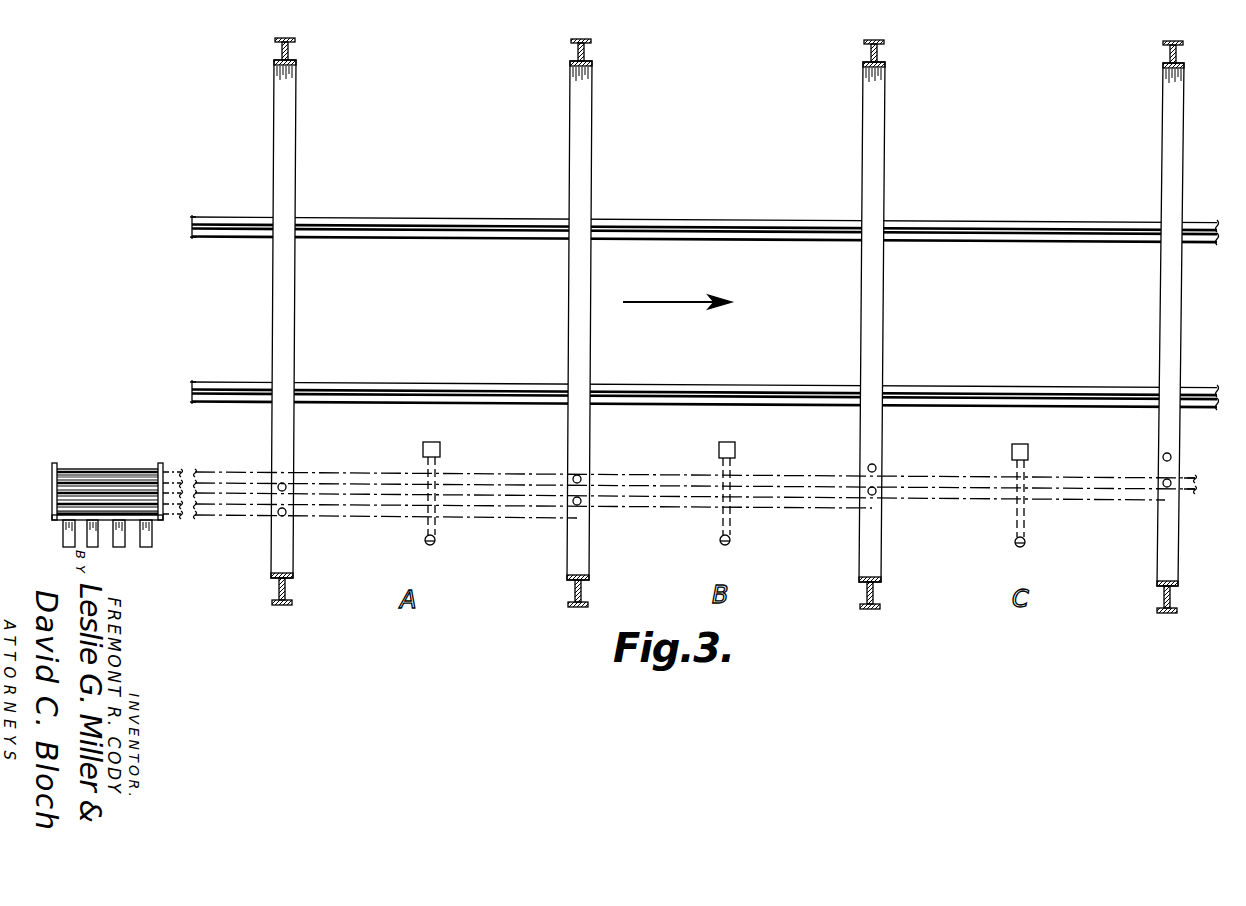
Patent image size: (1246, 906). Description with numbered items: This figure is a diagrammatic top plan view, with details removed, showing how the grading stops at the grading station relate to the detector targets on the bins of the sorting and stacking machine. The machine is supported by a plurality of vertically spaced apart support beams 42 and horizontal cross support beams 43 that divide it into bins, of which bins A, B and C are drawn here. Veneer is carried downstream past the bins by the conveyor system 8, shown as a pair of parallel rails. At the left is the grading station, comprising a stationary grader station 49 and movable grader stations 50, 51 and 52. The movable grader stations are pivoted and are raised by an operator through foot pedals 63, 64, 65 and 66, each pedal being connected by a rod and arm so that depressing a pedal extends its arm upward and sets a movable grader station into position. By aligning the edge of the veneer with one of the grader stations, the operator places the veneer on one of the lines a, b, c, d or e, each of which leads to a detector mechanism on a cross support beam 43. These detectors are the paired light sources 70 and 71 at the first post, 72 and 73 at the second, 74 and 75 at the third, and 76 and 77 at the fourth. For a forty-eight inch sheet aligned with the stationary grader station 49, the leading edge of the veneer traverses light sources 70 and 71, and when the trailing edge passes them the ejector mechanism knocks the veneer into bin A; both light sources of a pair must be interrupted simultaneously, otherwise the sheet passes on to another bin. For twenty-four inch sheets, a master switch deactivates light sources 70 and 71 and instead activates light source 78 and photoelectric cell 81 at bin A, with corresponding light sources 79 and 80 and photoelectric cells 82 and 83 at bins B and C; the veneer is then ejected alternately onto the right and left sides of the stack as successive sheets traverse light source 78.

The conveyor system 8 is at (430, 238).
The support beams 42 is at (290, 44).
The horizontal cross support beams 43 is at (274, 306).
The stationary grader station 49 is at (57, 519).
The movable grader station 50 is at (57, 500).
The movable grader station 51 is at (58, 479).
The movable grader station 52 is at (89, 470).
The foot pedal 63 is at (152, 540).
The foot pedal 64 is at (121, 548).
The foot pedal 65 is at (99, 548).
The foot pedal 66 is at (64, 545).
The light source 70 is at (283, 516).
The light source 71 is at (282, 483).
The light source 72 is at (580, 476).
The light source 73 is at (579, 505).
The light source 74 is at (876, 466).
The light source 75 is at (872, 495).
The light source 76 is at (1163, 457).
The light source 77 is at (1166, 487).
The light source 78 is at (431, 545).
The light source 79 is at (730, 540).
The light source 80 is at (1020, 548).
The photoelectric cell 81 is at (440, 451).
The photoelectric cell 82 is at (735, 451).
The photoelectric cell 83 is at (1028, 454).